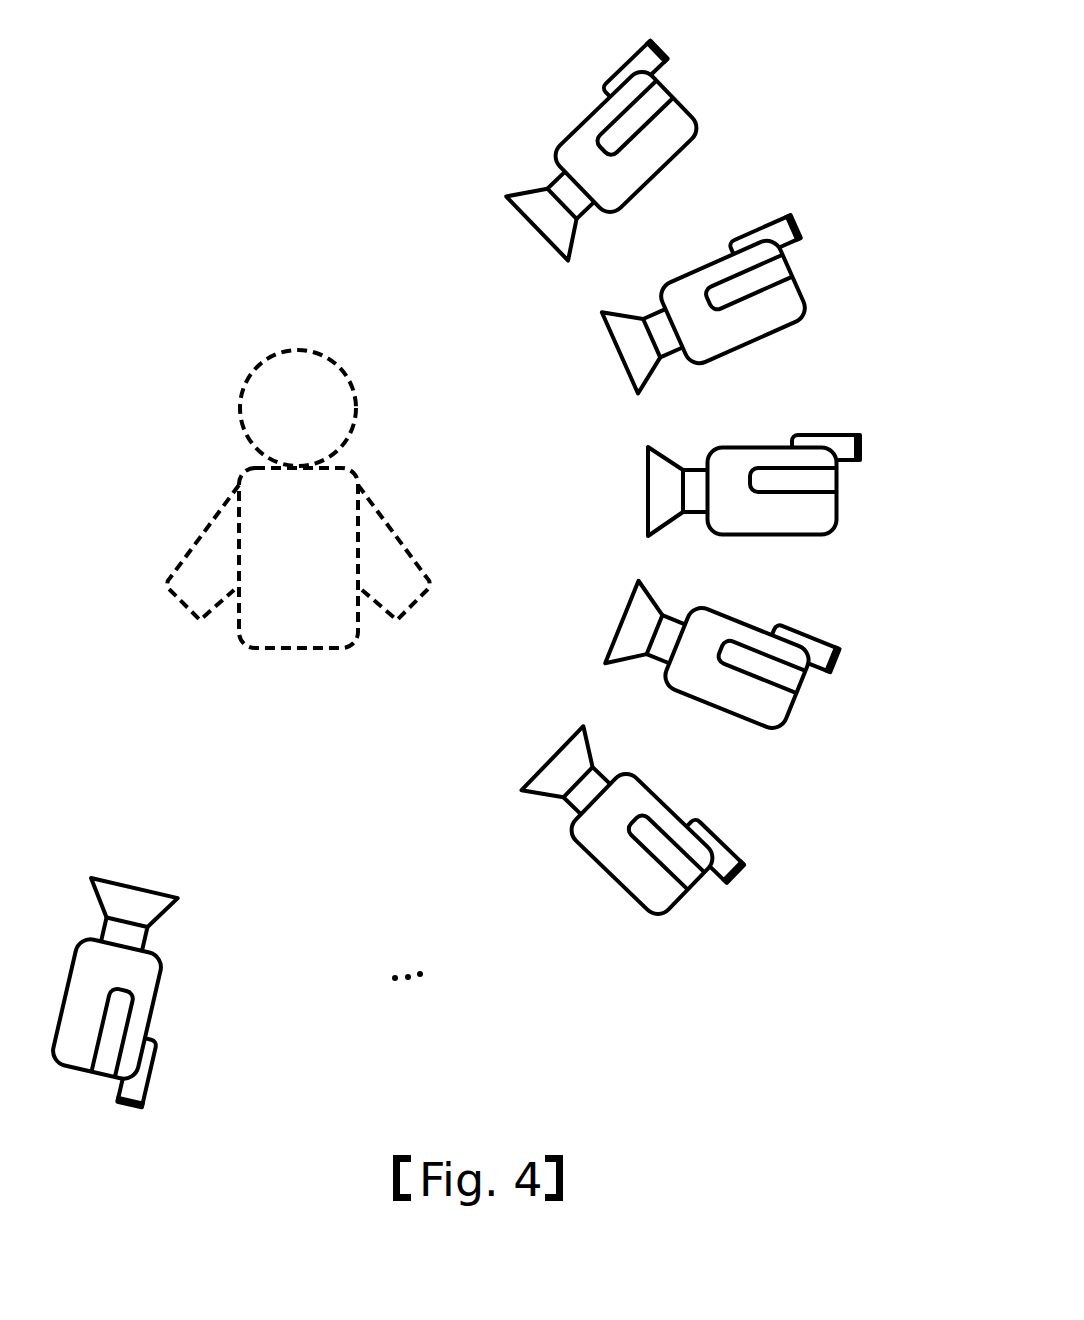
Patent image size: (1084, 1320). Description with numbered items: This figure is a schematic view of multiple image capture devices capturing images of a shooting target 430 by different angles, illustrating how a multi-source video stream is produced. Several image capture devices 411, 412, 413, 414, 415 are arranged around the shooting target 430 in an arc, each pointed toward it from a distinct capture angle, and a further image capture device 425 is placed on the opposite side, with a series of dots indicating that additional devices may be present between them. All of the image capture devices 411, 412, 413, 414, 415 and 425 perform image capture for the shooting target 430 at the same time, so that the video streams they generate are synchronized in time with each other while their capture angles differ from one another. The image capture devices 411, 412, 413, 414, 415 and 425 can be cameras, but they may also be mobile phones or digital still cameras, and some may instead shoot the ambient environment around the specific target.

The image capture device 411 is at (673, 98).
The image capture device 412 is at (795, 278).
The image capture device 413 is at (837, 492).
The image capture device 414 is at (800, 692).
The image capture device 415 is at (690, 890).
The image capture device 425 is at (93, 1070).
The shooting target 430 is at (298, 648).